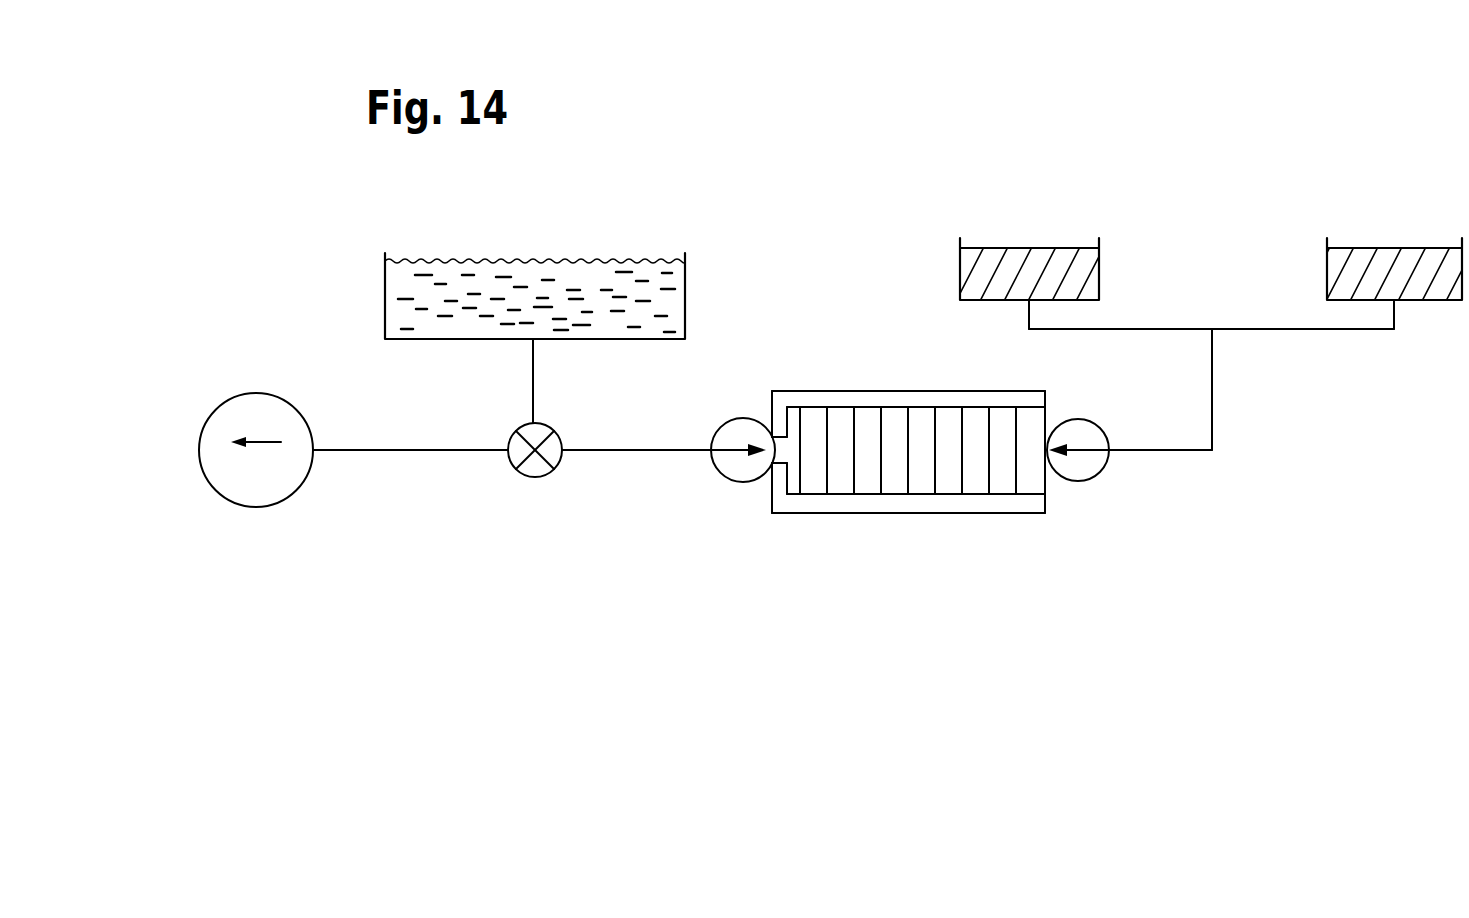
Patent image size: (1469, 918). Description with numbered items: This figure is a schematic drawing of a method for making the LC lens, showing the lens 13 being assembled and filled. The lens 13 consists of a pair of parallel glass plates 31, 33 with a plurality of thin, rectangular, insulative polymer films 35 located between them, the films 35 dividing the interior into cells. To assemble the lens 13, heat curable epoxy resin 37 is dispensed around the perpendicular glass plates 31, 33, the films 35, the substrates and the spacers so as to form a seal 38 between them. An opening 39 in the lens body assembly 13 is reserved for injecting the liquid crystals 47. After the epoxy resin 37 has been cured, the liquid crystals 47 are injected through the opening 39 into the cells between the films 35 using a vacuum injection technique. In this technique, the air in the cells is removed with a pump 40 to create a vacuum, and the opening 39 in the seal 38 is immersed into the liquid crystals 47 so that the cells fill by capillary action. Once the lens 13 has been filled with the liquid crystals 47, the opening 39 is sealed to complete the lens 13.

The lens 13 is at (778, 622).
The glass plate 31 is at (800, 391).
The glass plate 33 is at (982, 513).
The polymer films 35 is at (853, 455).
The heat curable epoxy resin 37 is at (1400, 236).
The seal 38 is at (769, 489).
The opening 39 is at (785, 453).
The pump 40 is at (253, 508).
The liquid crystals 47 is at (466, 259).